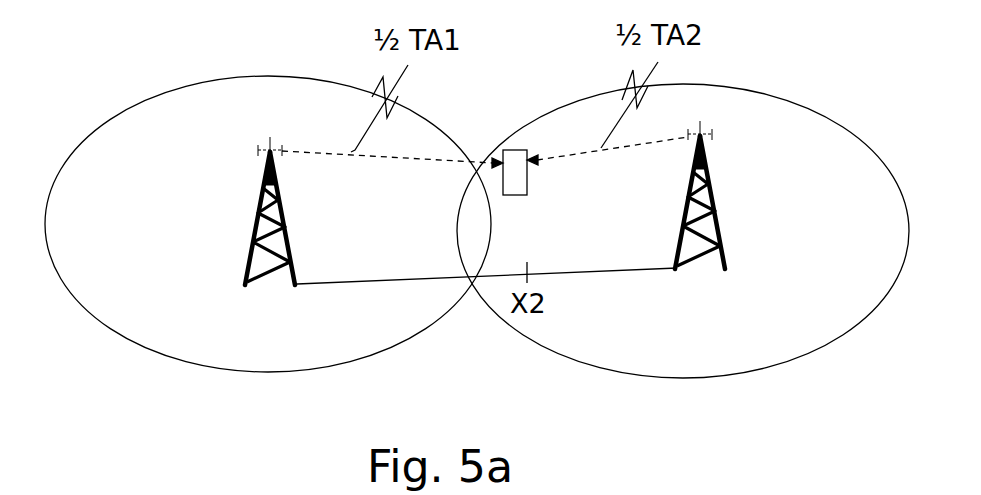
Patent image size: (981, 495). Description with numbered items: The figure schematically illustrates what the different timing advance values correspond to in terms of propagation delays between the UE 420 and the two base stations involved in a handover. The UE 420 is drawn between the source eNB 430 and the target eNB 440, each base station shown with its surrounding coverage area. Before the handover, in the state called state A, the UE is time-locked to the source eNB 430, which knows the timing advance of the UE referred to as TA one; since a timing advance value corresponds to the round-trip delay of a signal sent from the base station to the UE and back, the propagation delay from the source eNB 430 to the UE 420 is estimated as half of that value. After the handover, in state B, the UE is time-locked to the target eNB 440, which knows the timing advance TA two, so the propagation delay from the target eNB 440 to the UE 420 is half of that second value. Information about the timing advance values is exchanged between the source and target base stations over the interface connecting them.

The UE 420 is at (527, 150).
The source eNB 430 is at (243, 262).
The target eNB 440 is at (722, 256).